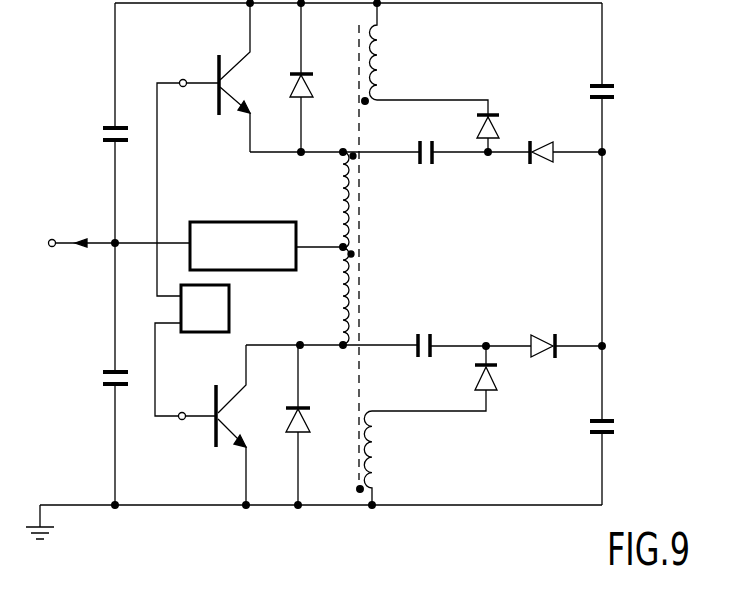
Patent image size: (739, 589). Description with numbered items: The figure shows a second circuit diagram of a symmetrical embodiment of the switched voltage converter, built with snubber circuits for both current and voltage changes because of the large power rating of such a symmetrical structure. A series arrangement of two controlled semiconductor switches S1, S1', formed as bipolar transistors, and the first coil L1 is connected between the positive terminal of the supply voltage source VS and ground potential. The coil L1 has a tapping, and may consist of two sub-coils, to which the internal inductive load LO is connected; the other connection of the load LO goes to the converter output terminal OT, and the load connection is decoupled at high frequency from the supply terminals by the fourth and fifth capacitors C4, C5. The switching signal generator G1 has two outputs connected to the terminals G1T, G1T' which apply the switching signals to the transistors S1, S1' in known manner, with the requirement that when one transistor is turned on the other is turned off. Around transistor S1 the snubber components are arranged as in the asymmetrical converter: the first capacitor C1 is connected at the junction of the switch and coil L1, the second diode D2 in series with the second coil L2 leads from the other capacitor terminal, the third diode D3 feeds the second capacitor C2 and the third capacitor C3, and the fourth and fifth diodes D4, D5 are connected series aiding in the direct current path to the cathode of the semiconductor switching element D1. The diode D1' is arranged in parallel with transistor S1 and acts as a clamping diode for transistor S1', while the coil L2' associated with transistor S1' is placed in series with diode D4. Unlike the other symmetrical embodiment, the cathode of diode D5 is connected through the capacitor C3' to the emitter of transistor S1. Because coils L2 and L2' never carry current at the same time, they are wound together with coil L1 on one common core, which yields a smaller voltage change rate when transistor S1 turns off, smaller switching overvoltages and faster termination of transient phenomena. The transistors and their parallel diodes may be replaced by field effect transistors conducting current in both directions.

The supply voltage source VS is at (51, 14).
The fourth capacitor C4 is at (103, 134).
The fifth capacitor C5 is at (103, 381).
The converter output terminal OT is at (120, 231).
The internal inductive load LO is at (256, 222).
The switching signal generator G1 is at (221, 333).
The switching signal terminal G1T is at (188, 174).
The switching signal terminal G1T' is at (185, 371).
The controlled semiconductor switch S1 is at (221, 77).
The semiconductor switch S1' is at (218, 426).
The semiconductor switching element D1 is at (315, 426).
The clamping diode D1' is at (319, 77).
The second semiconductor switching element D2 is at (478, 130).
The third semiconductor switching element D3 is at (538, 163).
The fourth semiconductor switching element D4 is at (476, 383).
The fifth diode D5 is at (546, 358).
The first coil L1 is at (357, 267).
The second coil L2 is at (425, 59).
The second coil for transistor S1' L2' is at (421, 449).
The first capacitor C1 is at (426, 165).
The second capacitor C2 is at (420, 330).
The third capacitor C3 is at (616, 83).
The third capacitor for transistor S1' C3' is at (620, 428).